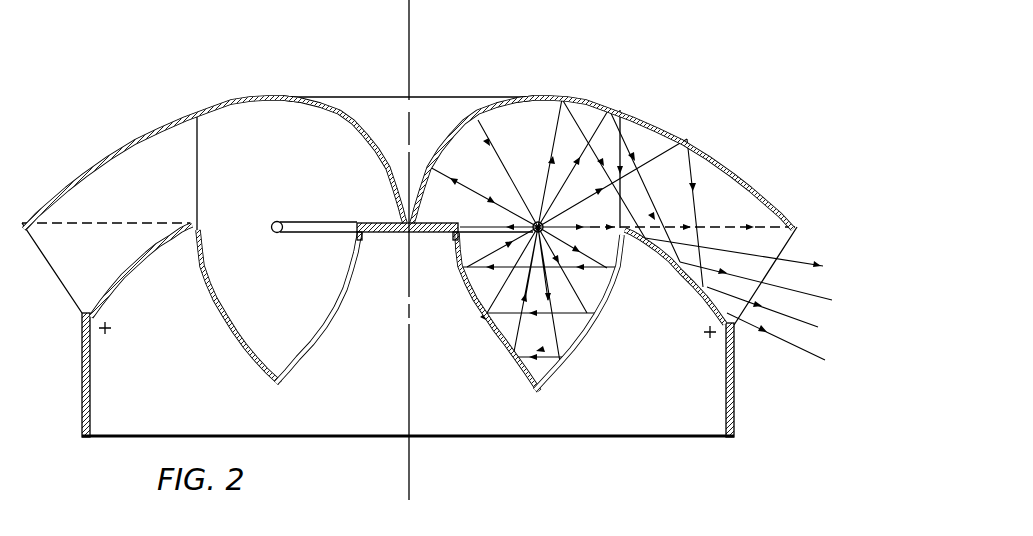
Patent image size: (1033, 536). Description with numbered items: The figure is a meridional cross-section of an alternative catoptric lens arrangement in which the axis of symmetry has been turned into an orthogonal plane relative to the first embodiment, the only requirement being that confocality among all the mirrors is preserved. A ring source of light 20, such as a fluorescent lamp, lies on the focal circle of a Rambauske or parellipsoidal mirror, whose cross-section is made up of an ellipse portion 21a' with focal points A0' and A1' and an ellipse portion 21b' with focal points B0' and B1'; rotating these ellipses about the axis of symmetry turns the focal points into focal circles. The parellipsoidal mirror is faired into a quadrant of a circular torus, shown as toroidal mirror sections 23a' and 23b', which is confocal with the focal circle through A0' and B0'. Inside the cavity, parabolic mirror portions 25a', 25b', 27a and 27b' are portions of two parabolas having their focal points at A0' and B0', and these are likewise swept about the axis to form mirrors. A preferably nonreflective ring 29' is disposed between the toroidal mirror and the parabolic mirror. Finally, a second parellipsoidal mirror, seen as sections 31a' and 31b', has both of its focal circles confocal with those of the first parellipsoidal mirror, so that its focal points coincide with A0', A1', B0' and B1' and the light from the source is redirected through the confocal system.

The ring source of light 20 is at (340, 218).
The ellipse portion 21a' is at (655, 153).
The ellipse portion 21b' is at (162, 151).
The toroidal mirror section 23a' is at (473, 137).
The toroidal mirror section 23b' is at (344, 140).
The parabolic mirror portion 25a' is at (485, 312).
The parabolic mirror portion 25b' is at (332, 307).
The parabolic mirror portion 27a is at (577, 347).
The parabolic mirror portion 27b' is at (239, 309).
The ring 29' is at (407, 259).
The parellipsoidal mirror section 31a' is at (675, 277).
The parellipsoidal mirror section 31b' is at (141, 271).
The focal point A0' is at (529, 189).
The focal point A1' is at (688, 358).
The focal point B0' is at (255, 236).
The focal point B1' is at (126, 321).